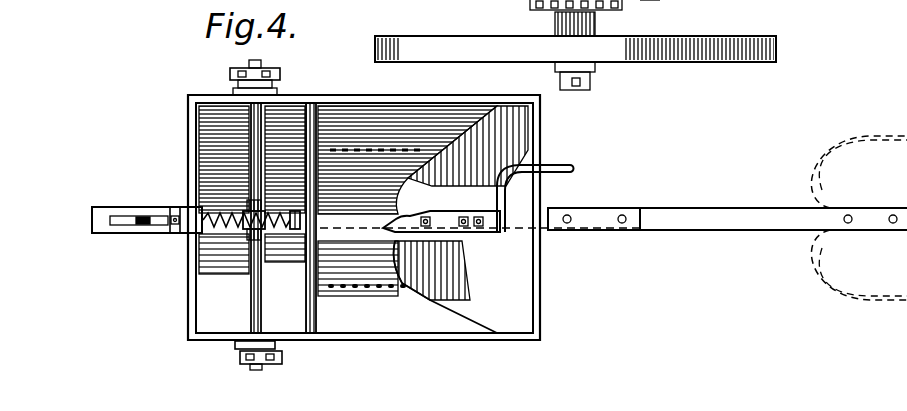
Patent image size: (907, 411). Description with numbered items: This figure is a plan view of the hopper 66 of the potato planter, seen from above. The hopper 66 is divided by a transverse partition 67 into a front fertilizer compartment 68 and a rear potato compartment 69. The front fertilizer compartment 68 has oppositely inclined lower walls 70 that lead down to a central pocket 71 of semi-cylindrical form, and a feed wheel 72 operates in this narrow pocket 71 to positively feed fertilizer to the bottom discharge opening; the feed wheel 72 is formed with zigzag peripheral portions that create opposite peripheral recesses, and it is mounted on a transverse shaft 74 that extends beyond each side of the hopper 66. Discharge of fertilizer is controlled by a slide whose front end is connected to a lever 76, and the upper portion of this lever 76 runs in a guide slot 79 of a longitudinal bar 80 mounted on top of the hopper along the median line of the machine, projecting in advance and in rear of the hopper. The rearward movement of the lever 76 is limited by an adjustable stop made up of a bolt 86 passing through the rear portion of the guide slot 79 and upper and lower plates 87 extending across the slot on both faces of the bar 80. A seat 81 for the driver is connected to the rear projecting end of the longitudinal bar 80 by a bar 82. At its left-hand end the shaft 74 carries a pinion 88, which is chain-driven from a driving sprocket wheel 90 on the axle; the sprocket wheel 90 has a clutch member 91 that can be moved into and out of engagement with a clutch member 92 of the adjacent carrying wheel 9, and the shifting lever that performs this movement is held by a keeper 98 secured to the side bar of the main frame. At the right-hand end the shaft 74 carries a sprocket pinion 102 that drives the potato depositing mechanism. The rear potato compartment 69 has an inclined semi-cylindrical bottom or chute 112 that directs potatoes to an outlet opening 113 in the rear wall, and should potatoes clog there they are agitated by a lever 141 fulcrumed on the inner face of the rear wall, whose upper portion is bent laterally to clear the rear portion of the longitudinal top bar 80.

The carrying wheel 9 is at (414, 48).
The hopper 66 is at (402, 101).
The transverse partition 67 is at (315, 289).
The front fertilizer compartment 68 is at (211, 103).
The rear potato compartment 69 is at (345, 103).
The inclined lower walls 70 is at (252, 224).
The central pocket 71 is at (296, 230).
The feed wheel 72 is at (237, 240).
The transverse shaft 74 is at (262, 120).
The lever 76 is at (139, 232).
The guide slot 79 is at (118, 214).
The longitudinal bar 80 is at (546, 230).
The seat 81 is at (859, 218).
The bar 82 is at (695, 215).
The bolt 86 is at (176, 233).
The upper and lower plates 87 is at (177, 208).
The pinion 88 is at (238, 362).
The driving sprocket wheel 90 is at (530, 4).
The clutch face or member 91 is at (590, 12).
The clutch face or member 92 is at (560, 24).
The keeper 98 is at (668, 0).
The sprocket pinion 102 is at (276, 76).
The inclined bottom or chute 112 is at (365, 268).
The outlet opening 113 is at (418, 238).
The lever 141 is at (470, 234).